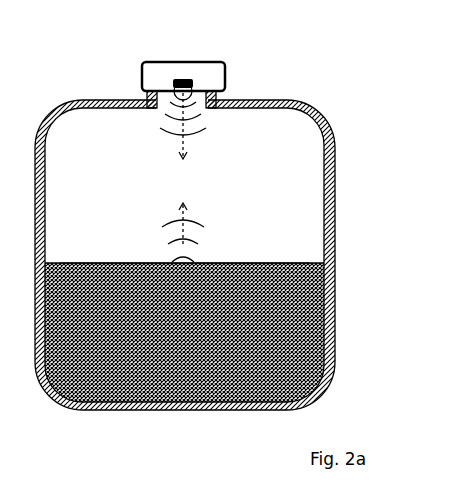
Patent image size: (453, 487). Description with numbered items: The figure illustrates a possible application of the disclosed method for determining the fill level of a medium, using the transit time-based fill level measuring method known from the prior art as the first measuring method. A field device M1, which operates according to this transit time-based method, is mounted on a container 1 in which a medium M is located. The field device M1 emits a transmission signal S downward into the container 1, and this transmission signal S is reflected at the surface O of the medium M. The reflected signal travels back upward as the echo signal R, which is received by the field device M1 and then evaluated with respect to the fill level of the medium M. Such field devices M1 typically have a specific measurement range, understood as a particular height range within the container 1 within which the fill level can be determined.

The container 1 is at (335, 300).
The field device M1 is at (112, 49).
The medium M is at (177, 351).
The surface of the medium O is at (277, 233).
The transmission signal S is at (183, 129).
The echo signal R is at (190, 231).